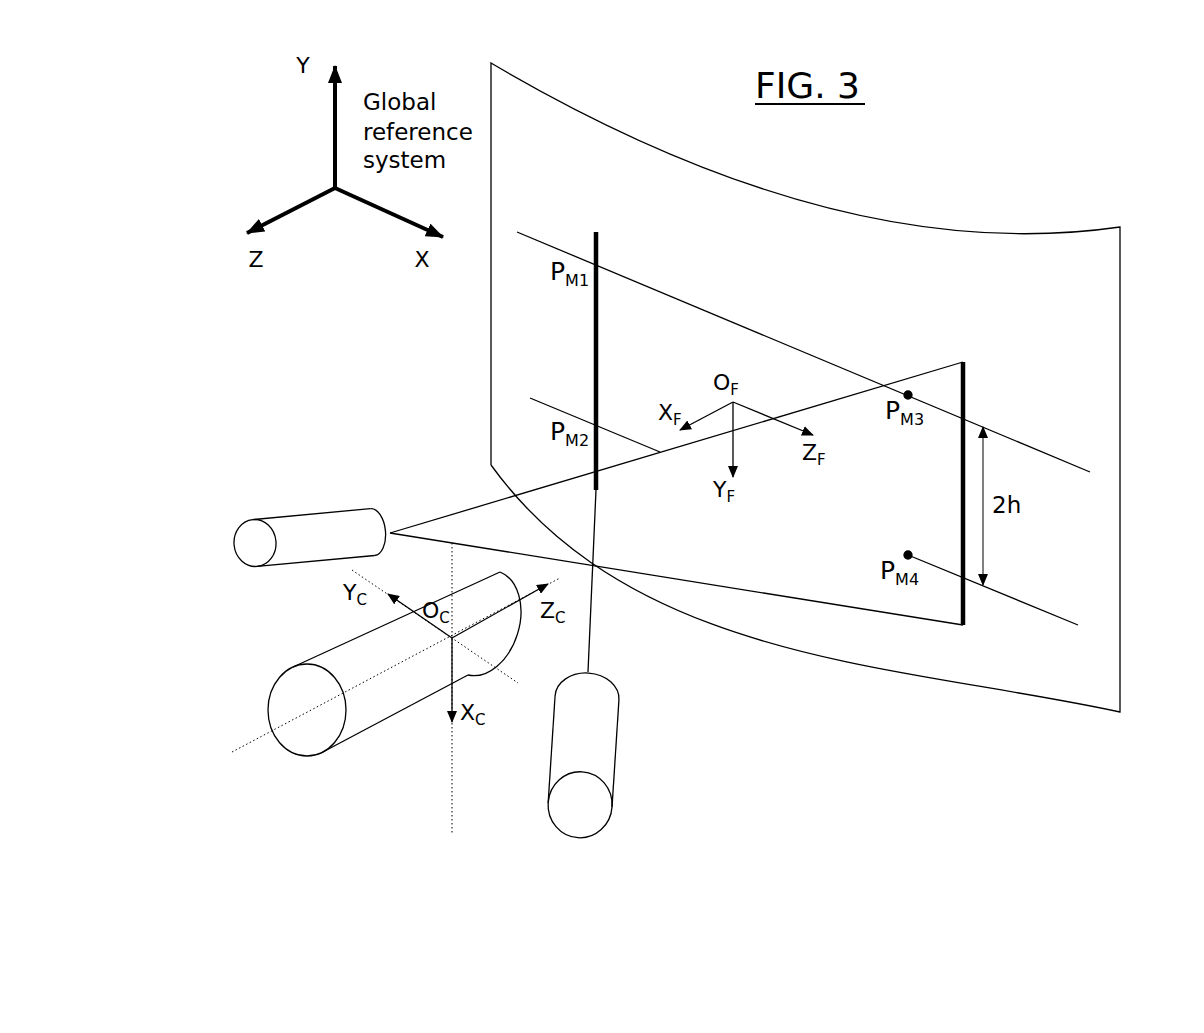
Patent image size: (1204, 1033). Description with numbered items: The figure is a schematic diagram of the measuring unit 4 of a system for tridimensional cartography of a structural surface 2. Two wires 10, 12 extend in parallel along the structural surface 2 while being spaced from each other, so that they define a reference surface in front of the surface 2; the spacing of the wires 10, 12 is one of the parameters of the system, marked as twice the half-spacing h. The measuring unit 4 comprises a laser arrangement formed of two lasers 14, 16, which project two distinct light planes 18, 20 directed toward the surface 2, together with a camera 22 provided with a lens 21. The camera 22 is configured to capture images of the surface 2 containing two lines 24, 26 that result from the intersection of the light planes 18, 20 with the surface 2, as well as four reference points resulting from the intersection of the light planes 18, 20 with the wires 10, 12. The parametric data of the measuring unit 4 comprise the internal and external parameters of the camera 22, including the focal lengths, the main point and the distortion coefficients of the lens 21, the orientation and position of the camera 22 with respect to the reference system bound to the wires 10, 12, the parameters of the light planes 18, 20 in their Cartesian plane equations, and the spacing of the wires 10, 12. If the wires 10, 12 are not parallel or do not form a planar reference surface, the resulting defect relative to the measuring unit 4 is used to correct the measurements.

The structural surface 2 is at (540, 325).
The measuring unit 4 is at (232, 490).
The wire 10 is at (1023, 443).
The wire 12 is at (1033, 605).
The laser 14 is at (600, 728).
The laser 16 is at (303, 527).
The light plane 18 is at (592, 633).
The light plane 20 is at (797, 550).
The lens 21 is at (517, 620).
The camera 22 is at (395, 691).
The line 24 is at (963, 362).
The line 26 is at (596, 232).